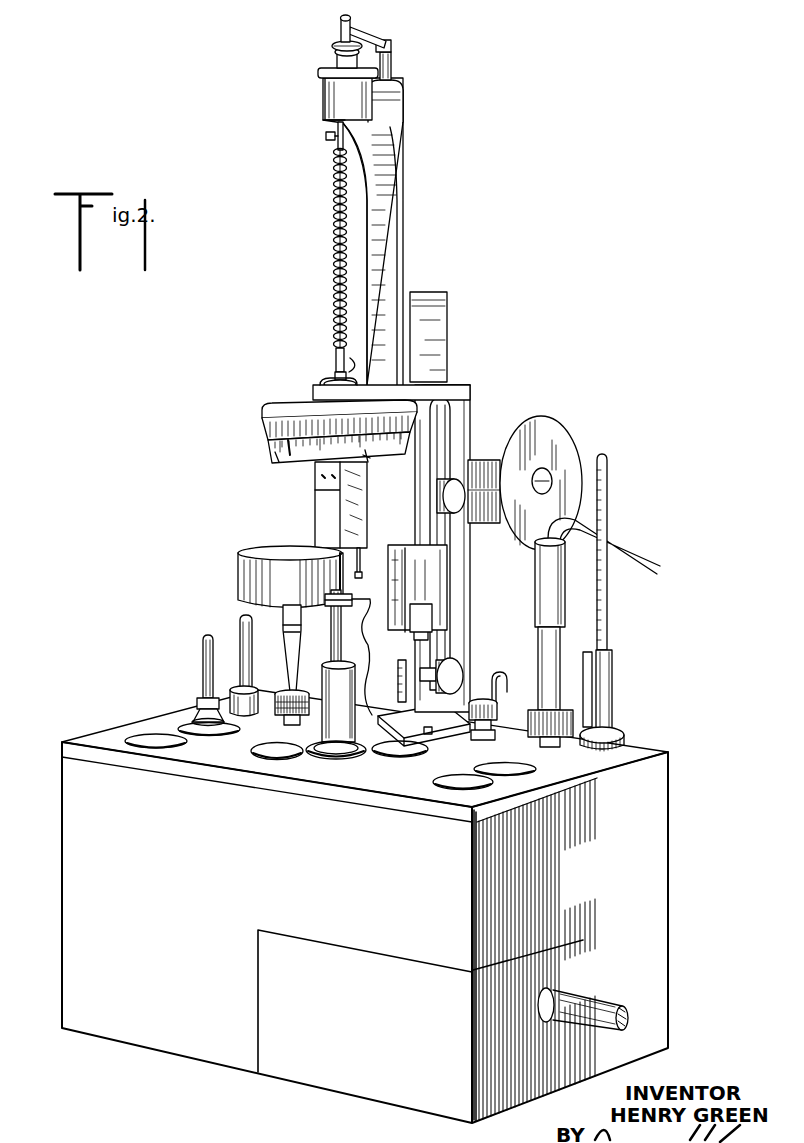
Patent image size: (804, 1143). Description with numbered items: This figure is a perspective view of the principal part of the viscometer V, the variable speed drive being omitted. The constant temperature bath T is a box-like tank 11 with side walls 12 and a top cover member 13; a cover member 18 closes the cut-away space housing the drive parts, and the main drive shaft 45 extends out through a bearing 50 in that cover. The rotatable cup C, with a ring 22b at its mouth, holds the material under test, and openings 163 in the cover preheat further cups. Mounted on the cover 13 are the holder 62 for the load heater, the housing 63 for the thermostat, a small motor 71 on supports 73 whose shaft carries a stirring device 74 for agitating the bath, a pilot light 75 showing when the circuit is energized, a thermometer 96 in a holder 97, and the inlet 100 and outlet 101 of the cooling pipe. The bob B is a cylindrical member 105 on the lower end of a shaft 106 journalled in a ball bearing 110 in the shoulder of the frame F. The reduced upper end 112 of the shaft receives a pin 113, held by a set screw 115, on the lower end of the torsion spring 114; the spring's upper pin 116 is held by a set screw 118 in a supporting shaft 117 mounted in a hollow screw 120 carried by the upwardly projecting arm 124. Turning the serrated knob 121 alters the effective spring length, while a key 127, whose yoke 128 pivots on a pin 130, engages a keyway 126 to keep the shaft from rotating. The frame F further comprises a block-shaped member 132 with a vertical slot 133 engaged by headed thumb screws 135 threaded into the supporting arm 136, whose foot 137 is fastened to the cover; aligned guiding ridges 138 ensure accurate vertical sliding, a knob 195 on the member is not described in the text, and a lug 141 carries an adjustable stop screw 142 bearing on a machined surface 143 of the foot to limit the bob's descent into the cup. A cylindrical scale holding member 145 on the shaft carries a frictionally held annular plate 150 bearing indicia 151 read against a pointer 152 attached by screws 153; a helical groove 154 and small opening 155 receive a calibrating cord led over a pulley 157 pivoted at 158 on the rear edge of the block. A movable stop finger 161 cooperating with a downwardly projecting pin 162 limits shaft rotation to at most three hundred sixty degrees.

The tank 11 is at (359, 912).
The side walls 12 is at (640, 810).
The top surface or cover member 13 is at (108, 730).
The cover member 18 is at (313, 1070).
The main drive shaft 45 is at (618, 1002).
The bearing 50 is at (540, 1012).
The heater housing or holder 62 is at (492, 740).
The thermostat housing 63 is at (545, 640).
The motor 71 is at (246, 560).
The motor supports 73 is at (240, 625).
The stirring device 74 is at (292, 645).
The pilot light 75 is at (500, 674).
The scale rod 96 is at (607, 600).
The thermometer holder 97 is at (612, 670).
The inlet 100 is at (195, 680).
The outlet 101 is at (608, 712).
The cylindrical member 105 is at (325, 725).
The shaft 106 is at (338, 620).
The ball bearing 110 is at (324, 385).
The reduced upper end of shaft 112 is at (336, 357).
The pin 113 is at (336, 350).
The torsion member 114 is at (333, 248).
The set screw 115 is at (352, 360).
The pin 116 is at (337, 146).
The supporting shaft or pin 117 is at (330, 130).
The set screw 118 is at (326, 137).
The hollow screw 120 is at (326, 70).
The serrated turning knob 121 is at (332, 47).
The supporting arm 124 is at (402, 190).
The groove or keyway 126 is at (336, 24).
The key or locking member 127 is at (386, 30).
The yoke 128 is at (393, 46).
The supporting pin 130 is at (396, 64).
The block-shaped member 132 is at (484, 533).
The slot 133 is at (442, 420).
The thumb screws 135 is at (452, 676).
The supporting arm 136 is at (448, 306).
The base or foot 137 is at (430, 744).
The guiding ridge 138 is at (398, 686).
The lug 141 is at (435, 600).
The stop screw 142 is at (416, 632).
The machined surface 143 is at (430, 728).
The scale holding member 145 is at (282, 406).
The annular plate 150 is at (366, 455).
The scale or indicia 151 is at (270, 440).
The pointer 152 is at (278, 462).
The screws 153 is at (320, 490).
The helical groove 154 is at (287, 446).
The opening 155 is at (266, 420).
The wheel or pulley 157 is at (559, 474).
The pivot 158 is at (550, 475).
The stop finger 161 is at (372, 605).
The pin 162 is at (362, 572).
The openings 163 is at (500, 778).
The knob 195 is at (456, 482).
The ring 22b is at (320, 756).
The bob B is at (336, 685).
The cup C is at (340, 762).
The constant temperature bath T is at (217, 869).
The frame F is at (421, 250).
The viscometer V is at (509, 360).